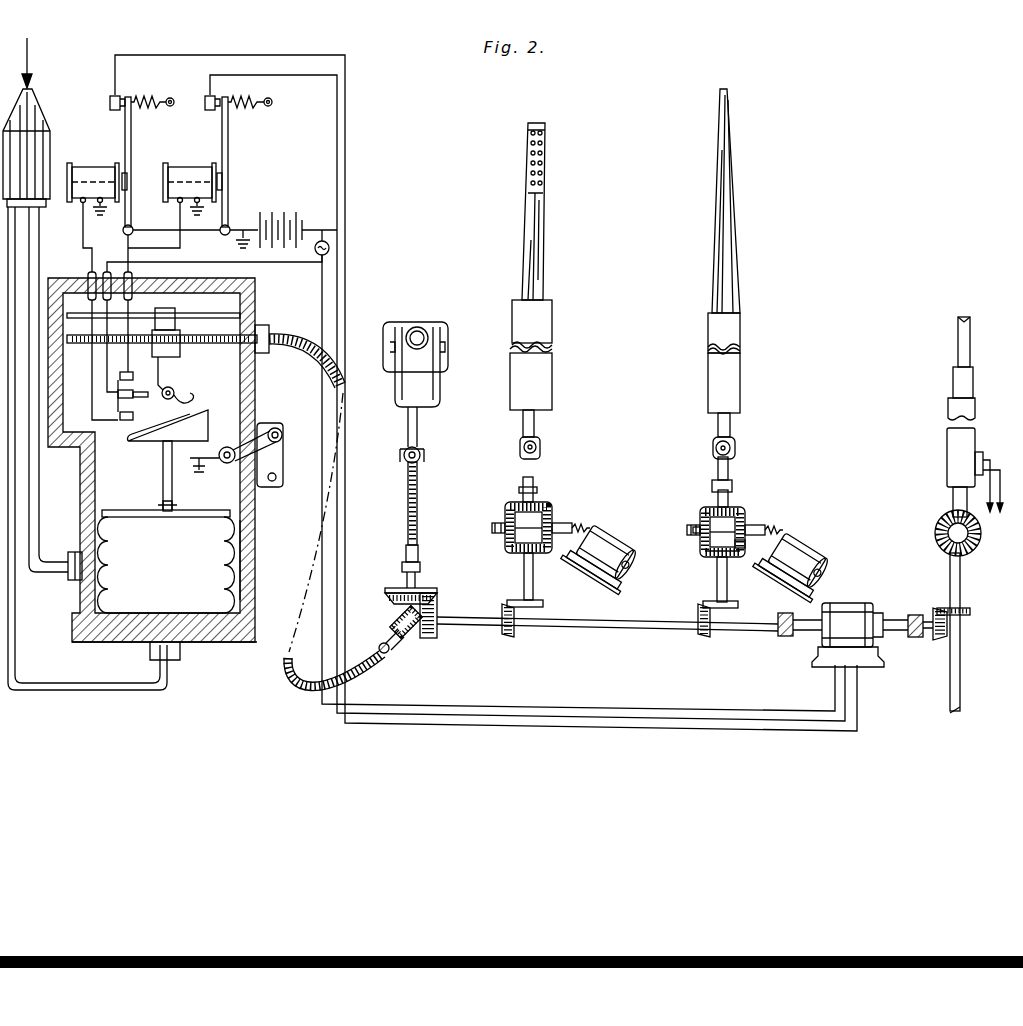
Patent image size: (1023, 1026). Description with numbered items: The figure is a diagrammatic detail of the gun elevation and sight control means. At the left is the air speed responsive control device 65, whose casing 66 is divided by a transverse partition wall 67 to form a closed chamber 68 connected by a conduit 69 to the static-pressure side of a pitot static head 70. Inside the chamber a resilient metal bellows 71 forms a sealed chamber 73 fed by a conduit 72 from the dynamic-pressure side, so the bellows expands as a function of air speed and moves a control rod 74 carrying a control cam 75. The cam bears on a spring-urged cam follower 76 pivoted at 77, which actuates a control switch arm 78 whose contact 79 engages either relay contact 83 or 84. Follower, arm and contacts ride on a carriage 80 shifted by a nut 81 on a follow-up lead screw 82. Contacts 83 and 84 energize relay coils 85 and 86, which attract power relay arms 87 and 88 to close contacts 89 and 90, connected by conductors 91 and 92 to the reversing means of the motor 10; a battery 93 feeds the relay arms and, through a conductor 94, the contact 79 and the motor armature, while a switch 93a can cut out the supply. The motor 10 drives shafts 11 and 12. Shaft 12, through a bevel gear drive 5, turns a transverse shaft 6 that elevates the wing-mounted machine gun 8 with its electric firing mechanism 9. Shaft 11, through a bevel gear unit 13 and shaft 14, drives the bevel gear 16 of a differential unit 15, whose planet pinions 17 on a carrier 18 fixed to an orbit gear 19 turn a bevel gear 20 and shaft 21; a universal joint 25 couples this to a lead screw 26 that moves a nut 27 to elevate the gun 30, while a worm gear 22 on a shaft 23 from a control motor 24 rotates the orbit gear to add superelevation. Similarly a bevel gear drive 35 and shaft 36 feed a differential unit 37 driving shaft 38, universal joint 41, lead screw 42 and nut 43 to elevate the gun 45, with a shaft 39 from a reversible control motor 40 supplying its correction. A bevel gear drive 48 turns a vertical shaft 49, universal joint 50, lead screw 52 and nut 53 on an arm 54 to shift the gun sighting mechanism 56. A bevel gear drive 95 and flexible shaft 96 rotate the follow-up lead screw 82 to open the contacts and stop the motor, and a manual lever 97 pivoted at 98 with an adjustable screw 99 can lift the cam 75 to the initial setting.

The bevel gear drive 5 is at (934, 608).
The shaft 6 is at (962, 593).
The wing-mounted machine gun 8 is at (976, 410).
The electric firing mechanism 9 is at (978, 458).
The motor 10 is at (866, 602).
The shaft 11 is at (742, 630).
The shaft 12 is at (925, 638).
The bevel gear unit 13 is at (698, 606).
The shaft 14 is at (728, 572).
The differential unit 15 is at (690, 505).
The bevel gear 16 is at (705, 558).
The planet pinion 17 is at (746, 525).
The carrier 18 is at (777, 529).
The orbit gear 19 is at (688, 524).
The bevel gear 20 is at (744, 511).
The shaft 21 is at (730, 496).
The worm gear 22 is at (742, 548).
The shaft 23 is at (798, 546).
The control motor 24 is at (820, 557).
The universal joint 25 is at (732, 482).
The lead screw 26 is at (716, 467).
The nut 27 is at (736, 447).
The gun 30 is at (740, 333).
The bevel gear drive 35 is at (522, 628).
The shaft 36 is at (533, 576).
The differential unit 37 is at (551, 497).
The shaft 38 is at (512, 502).
The shaft 39 is at (578, 524).
The reversible control motor 40 is at (604, 532).
The universal joint 41 is at (536, 481).
The lead screw 42 is at (541, 449).
The nut 43 is at (520, 446).
The gun 45 is at (552, 393).
The bevel gear drive 48 is at (433, 592).
The vertical shaft 49 is at (400, 577).
The universal joint 50 is at (418, 556).
The lead screw 52 is at (418, 492).
The nut 53 is at (420, 456).
The arm 54 is at (438, 402).
The gun sighting mechanism 56 is at (430, 318).
The air speed responsive control device 65 is at (236, 656).
The casing 66 is at (242, 583).
The transverse partition wall 67 is at (245, 504).
The closed chamber 68 is at (233, 549).
The conduit 69 is at (38, 508).
The pitot static head 70 is at (42, 104).
The resilient metal bellows 71 is at (230, 612).
The conduit 72 is at (68, 693).
The sealed chamber 73 is at (166, 548).
The control rod 74 is at (163, 457).
The control cam 75 is at (200, 417).
The cam follower 76 is at (196, 400).
The pivot 77 is at (174, 390).
The control switch arm 78 is at (150, 397).
The contact 79 is at (118, 394).
The carriage 80 is at (177, 370).
The nut 81 is at (178, 316).
The follow-up lead screw 82 is at (219, 344).
The relay contact 83 is at (132, 372).
The relay contact 84 is at (128, 420).
The relay coil 85 is at (198, 151).
The relay coil 86 is at (98, 151).
The power relay arm 87 is at (229, 158).
The power relay arm 88 is at (132, 146).
The contacts 89 is at (225, 94).
The contacts 90 is at (126, 94).
The conductor 91 is at (336, 153).
The conductor 92 is at (346, 149).
The battery 93 is at (295, 196).
The switch 93a is at (334, 238).
The conductor 94 is at (390, 724).
The bevel gear drive 95 is at (395, 612).
The flexible shaft 96 is at (306, 316).
The lever 97 is at (262, 424).
The pivot 98 is at (230, 447).
The adjustable screw 99 is at (205, 475).